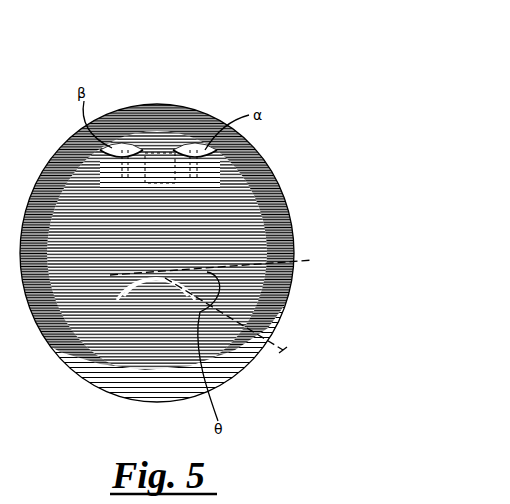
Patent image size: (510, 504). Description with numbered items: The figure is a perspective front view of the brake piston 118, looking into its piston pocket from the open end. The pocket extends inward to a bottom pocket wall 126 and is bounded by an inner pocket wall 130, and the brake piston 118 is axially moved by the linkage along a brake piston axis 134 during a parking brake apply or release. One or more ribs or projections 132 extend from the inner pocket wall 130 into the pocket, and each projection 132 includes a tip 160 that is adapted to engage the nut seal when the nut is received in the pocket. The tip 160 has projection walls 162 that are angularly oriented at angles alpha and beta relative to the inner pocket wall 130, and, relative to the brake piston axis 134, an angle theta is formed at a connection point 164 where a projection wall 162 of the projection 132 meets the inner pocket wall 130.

The brake piston 118 is at (281, 158).
The bottom pocket wall 126 is at (112, 227).
The inner pocket wall 130 is at (58, 224).
The projections 132 is at (170, 147).
The brake piston axis 134 is at (163, 270).
The tip 160 is at (160, 158).
The projection walls 162 is at (246, 266).
The connection point 164 is at (252, 238).